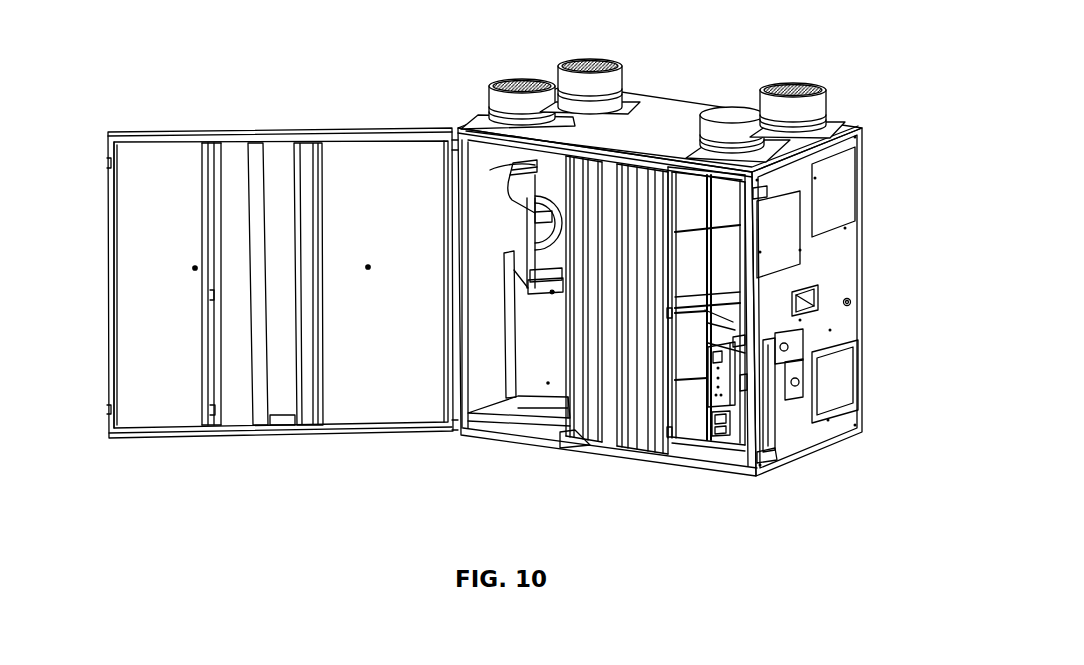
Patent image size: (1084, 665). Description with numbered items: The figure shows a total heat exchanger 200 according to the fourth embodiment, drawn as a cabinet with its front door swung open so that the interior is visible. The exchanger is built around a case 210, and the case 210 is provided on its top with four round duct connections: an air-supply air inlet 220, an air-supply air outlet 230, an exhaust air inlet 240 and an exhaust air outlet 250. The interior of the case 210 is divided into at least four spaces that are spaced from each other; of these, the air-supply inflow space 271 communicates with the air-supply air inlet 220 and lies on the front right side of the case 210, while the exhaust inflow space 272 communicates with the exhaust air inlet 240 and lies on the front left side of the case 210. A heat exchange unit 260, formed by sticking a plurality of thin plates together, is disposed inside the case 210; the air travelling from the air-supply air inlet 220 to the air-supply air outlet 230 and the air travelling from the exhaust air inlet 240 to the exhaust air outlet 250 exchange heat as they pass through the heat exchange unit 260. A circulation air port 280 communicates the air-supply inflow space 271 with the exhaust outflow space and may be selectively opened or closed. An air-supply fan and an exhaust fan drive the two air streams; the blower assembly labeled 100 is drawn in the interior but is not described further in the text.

The total heat exchanger 200 is at (129, 54).
The case 210 is at (655, 135).
The air-supply air inlet 220 is at (502, 83).
The air-supply air outlet 230 is at (815, 86).
The exhaust air inlet 240 is at (730, 112).
The exhaust air outlet 250 is at (568, 58).
The heat exchange unit 260 is at (630, 330).
The air-supply inflow space 271 is at (505, 318).
The exhaust inflow space 272 is at (693, 392).
The circulation air port 280 is at (540, 229).
The blower assembly 100 is at (488, 172).